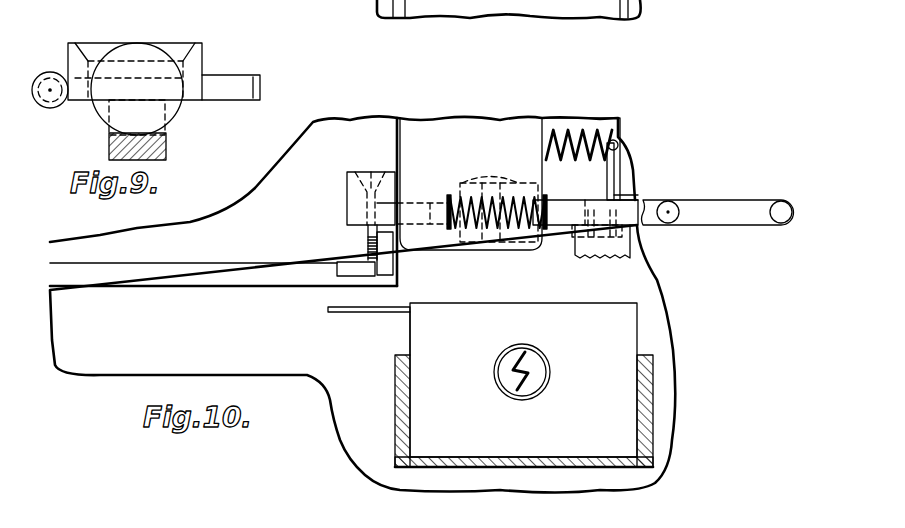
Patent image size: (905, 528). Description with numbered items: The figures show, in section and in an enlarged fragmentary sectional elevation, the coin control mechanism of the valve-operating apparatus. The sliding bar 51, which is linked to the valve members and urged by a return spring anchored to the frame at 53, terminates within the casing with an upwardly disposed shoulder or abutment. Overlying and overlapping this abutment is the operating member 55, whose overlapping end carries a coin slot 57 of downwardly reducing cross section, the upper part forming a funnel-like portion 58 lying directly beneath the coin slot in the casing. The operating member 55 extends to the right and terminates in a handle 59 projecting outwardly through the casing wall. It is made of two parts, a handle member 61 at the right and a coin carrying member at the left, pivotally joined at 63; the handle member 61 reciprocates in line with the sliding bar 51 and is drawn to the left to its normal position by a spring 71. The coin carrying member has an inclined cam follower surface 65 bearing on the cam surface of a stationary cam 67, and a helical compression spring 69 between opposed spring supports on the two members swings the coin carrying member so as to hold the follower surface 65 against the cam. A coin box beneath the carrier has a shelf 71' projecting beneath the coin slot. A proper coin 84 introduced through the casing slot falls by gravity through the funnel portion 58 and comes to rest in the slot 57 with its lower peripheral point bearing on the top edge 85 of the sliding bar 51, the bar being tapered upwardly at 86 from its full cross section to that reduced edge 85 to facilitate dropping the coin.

In FIG. 10, the sliding bar 51 is at (267, 260).
In FIG. 10, the frame connection point 53 is at (388, 248).
In FIG. 10, the operating member 55 is at (575, 200).
In FIG. 9, the coin slot 57 is at (180, 72).
In FIG. 10, the coin slot 57 is at (366, 212).
In FIG. 10, the funnel-like portion 58 is at (370, 170).
In FIG. 10, the handle 59 is at (690, 199).
In FIG. 10, the handle member 61 is at (622, 197).
In FIG. 10, the pivotal connection 63 is at (487, 183).
In FIG. 10, the inclined cam follower surface 65 is at (410, 215).
In FIG. 10, the stationary cam 67 is at (435, 252).
In FIG. 10, the helical compression spring 69 is at (537, 222).
In FIG. 10, the spring 71 is at (581, 137).
In FIG. 10, the shelf 71' is at (369, 331).
In FIG. 9, the coin 84 is at (157, 50).
In FIG. 10, the coin 84 is at (368, 242).
In FIG. 9, the top edge 85 is at (142, 134).
In FIG. 10, the top edge 85 is at (366, 257).
In FIG. 9, the tapered portion 86 is at (163, 143).
In FIG. 10, the tapered portion 86 is at (347, 272).